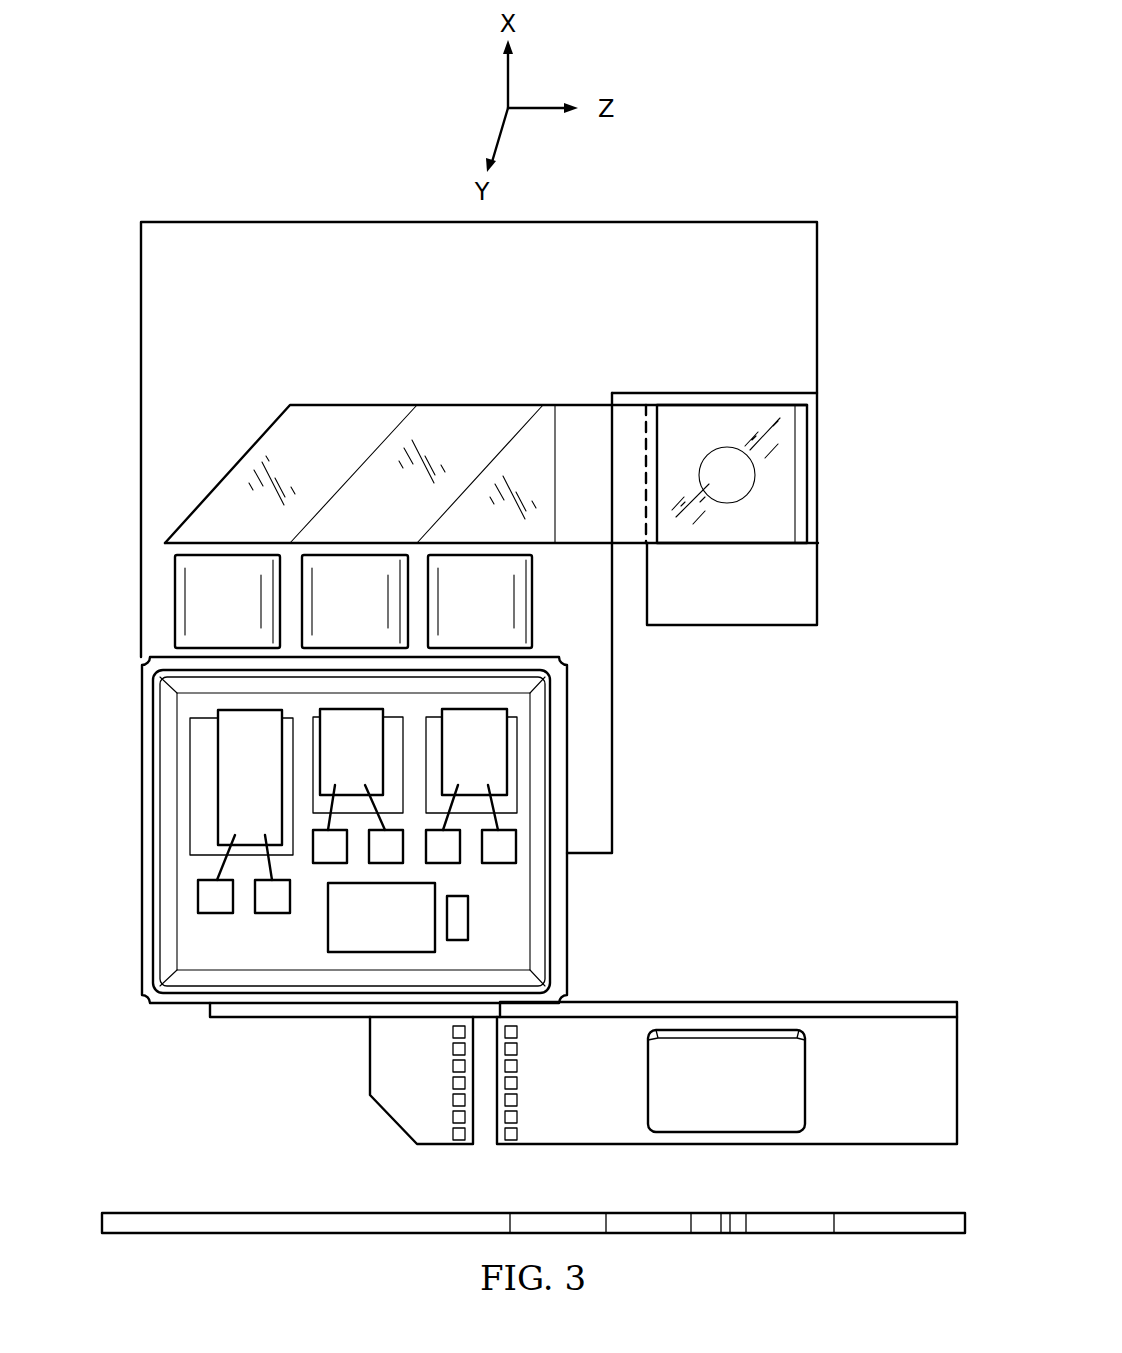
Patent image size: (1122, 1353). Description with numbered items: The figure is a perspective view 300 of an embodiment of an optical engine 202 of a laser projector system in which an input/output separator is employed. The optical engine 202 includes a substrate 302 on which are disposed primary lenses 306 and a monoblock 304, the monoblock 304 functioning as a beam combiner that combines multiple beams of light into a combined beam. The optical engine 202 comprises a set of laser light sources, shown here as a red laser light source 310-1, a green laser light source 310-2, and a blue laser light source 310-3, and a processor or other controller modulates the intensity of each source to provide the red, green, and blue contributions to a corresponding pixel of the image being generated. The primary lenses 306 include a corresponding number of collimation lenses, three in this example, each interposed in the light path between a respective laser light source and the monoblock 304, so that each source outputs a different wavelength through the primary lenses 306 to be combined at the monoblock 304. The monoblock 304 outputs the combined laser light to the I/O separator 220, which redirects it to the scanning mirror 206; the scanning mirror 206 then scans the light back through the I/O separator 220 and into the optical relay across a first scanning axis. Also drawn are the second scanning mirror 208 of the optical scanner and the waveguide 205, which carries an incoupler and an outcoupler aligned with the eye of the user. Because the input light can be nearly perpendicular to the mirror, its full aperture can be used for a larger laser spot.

The perspective view 300 is at (355, 158).
The substrate 302 is at (150, 385).
The monoblock 304 is at (321, 378).
The primary lenses 306 is at (152, 598).
The scanning mirror 206 is at (647, 430).
The I/O separator 220 is at (729, 544).
The optical engine 202 is at (592, 921).
The red laser light source 310-1 is at (243, 775).
The green laser light source 310-2 is at (360, 745).
The blue laser light source 310-3 is at (490, 768).
The second scanning mirror 208 is at (726, 1143).
The waveguide 205 is at (330, 1240).